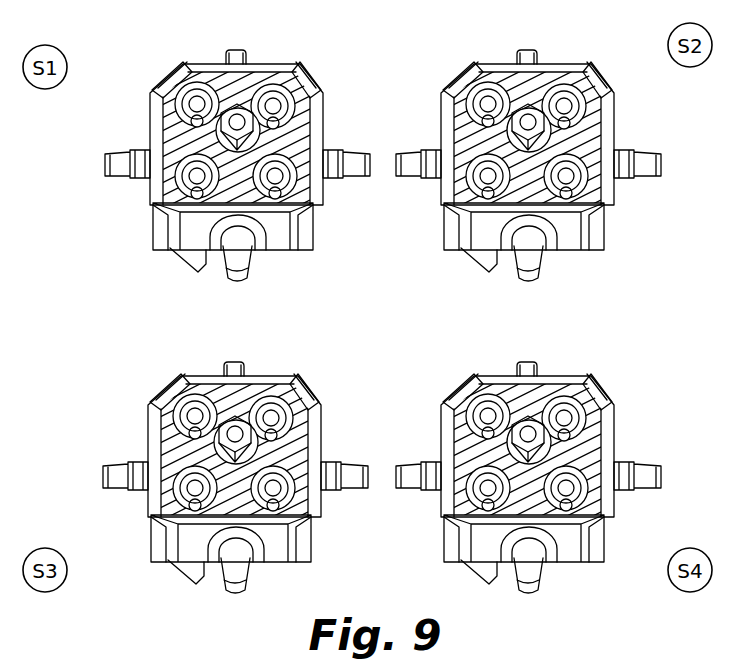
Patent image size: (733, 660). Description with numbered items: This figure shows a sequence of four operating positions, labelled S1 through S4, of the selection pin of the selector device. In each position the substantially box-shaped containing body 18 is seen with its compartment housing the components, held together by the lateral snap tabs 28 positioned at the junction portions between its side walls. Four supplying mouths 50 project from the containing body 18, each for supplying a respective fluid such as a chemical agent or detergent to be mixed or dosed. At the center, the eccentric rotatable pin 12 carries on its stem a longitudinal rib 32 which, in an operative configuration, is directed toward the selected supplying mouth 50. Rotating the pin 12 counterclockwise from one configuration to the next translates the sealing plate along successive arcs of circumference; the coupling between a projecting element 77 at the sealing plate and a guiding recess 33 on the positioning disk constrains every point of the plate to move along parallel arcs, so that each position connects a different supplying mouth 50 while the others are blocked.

The rotatable pin 12 is at (218, 130).
The containing body 18 is at (150, 113).
The lateral snap tabs 28 is at (178, 82).
The longitudinal rib 32 is at (242, 112).
The guiding recess 33 is at (200, 112).
The supplying mouth 50 is at (238, 50).
The projecting element 77 is at (285, 118).